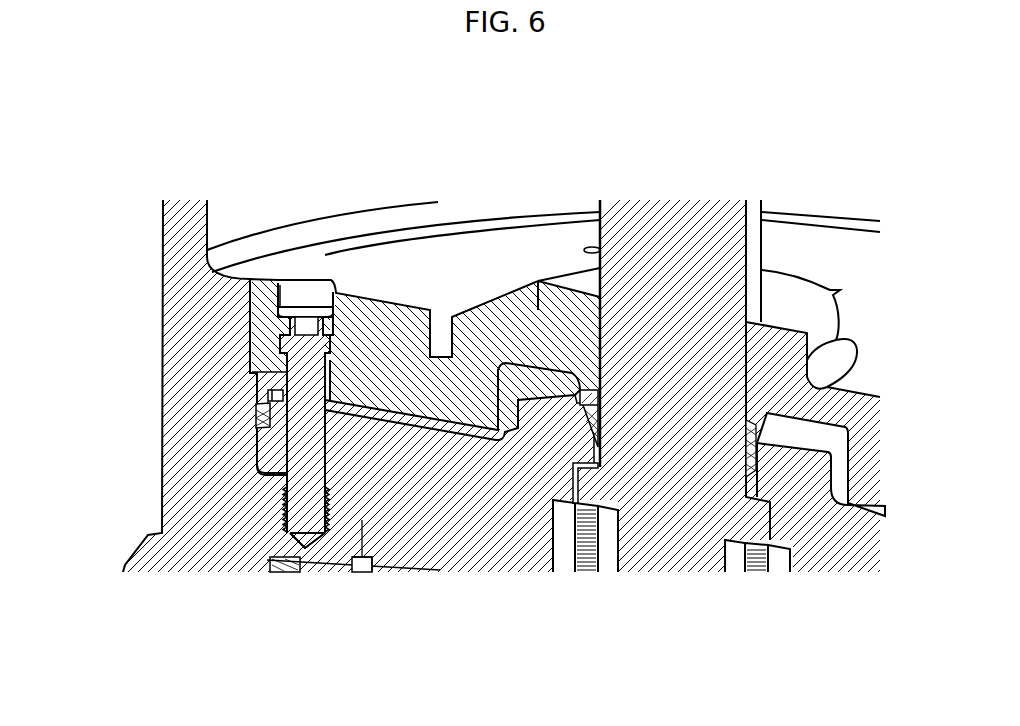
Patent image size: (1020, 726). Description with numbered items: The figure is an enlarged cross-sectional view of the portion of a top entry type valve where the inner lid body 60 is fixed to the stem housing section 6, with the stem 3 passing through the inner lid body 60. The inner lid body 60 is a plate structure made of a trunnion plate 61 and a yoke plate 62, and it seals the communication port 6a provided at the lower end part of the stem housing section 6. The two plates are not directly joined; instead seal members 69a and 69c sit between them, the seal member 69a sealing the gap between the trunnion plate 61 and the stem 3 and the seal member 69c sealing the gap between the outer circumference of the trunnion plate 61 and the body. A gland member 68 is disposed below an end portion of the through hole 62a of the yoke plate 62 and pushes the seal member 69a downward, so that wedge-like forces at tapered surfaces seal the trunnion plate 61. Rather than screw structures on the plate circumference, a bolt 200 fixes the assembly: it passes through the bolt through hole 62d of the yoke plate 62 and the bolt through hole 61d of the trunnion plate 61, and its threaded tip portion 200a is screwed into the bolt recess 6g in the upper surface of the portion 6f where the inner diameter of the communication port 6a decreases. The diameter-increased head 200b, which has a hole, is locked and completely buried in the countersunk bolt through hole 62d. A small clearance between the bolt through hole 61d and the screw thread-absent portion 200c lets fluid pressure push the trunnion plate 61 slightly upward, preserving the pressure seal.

The stem 3 is at (678, 212).
The stem housing section 6 is at (146, 205).
The communication port 6a is at (262, 382).
The portion at which the inner diameter of the communication port decreases 6f is at (340, 548).
The bolt recess 6g is at (306, 548).
The inner lid body 60 is at (510, 430).
The trunnion plate 61 is at (453, 523).
The bolt through hole 61d is at (265, 470).
The yoke plate 62 is at (410, 402).
The through hole 62a is at (598, 330).
The bolt through hole 62d is at (287, 297).
The gland member 68 is at (539, 280).
The seal member 69a is at (595, 440).
The seal member 69c is at (258, 430).
The bolt 200 is at (340, 367).
The tip portion 200a is at (331, 488).
The diameter-increased head 200b is at (307, 316).
The screw thread-absent portion 200c is at (283, 421).